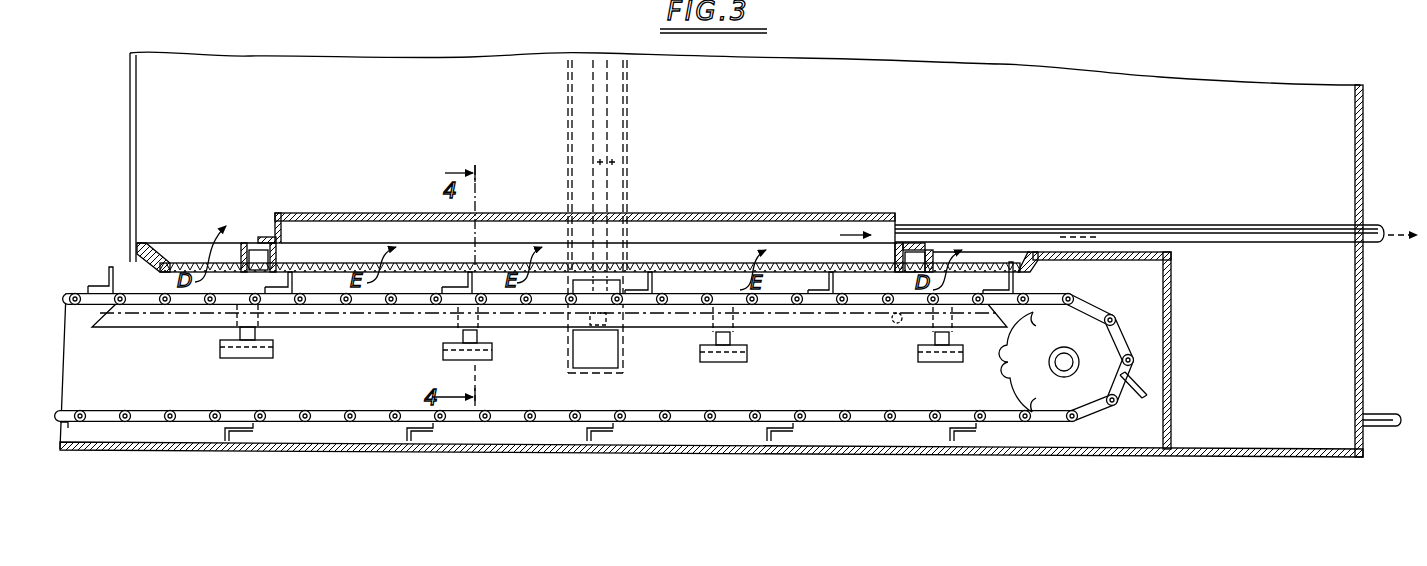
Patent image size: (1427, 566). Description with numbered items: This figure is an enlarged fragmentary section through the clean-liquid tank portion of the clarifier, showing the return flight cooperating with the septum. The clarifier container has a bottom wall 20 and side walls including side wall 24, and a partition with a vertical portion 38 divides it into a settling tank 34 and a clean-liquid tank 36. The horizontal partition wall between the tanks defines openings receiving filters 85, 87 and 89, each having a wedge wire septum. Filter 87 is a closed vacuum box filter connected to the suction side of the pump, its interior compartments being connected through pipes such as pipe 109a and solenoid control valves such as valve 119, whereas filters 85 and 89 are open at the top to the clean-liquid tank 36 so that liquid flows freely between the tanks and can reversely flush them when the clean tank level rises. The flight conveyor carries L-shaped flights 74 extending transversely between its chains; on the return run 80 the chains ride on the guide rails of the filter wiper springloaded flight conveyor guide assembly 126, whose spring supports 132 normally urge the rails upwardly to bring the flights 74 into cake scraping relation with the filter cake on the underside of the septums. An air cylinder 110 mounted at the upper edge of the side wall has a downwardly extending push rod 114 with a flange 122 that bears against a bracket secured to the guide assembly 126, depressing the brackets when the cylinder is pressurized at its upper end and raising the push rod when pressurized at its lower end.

The bottom wall 20 is at (905, 455).
The side wall 24 is at (745, 131).
The settling tank 34 is at (190, 374).
The clean-liquid tank 36 is at (1162, 145).
The vertical portion of partition 38 is at (330, 0).
The flights 74 is at (827, 282).
The return run 80 is at (677, 303).
The filter 85 is at (180, 249).
The filter 87 is at (350, 210).
The filter 89 is at (1000, 264).
The pipe 109a is at (1260, 228).
The air cylinder 110 is at (600, 0).
The push rod 114 is at (605, 158).
The solenoid control valve 119 is at (1177, 0).
The flange 122 is at (590, 314).
The filter wiper springloaded flight conveyor guide assembly 126 is at (875, 320).
The spring support 132 is at (243, 361).